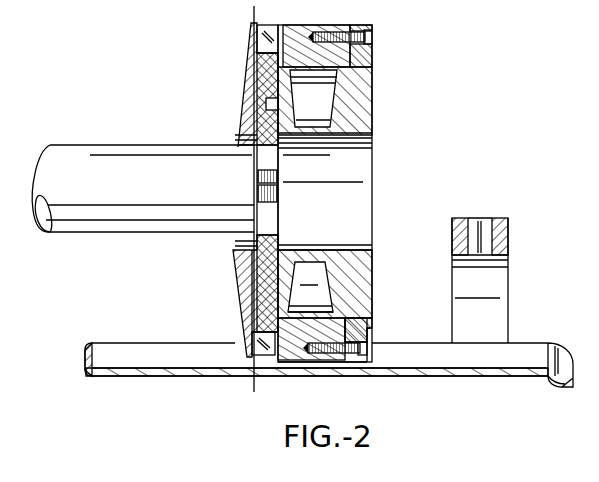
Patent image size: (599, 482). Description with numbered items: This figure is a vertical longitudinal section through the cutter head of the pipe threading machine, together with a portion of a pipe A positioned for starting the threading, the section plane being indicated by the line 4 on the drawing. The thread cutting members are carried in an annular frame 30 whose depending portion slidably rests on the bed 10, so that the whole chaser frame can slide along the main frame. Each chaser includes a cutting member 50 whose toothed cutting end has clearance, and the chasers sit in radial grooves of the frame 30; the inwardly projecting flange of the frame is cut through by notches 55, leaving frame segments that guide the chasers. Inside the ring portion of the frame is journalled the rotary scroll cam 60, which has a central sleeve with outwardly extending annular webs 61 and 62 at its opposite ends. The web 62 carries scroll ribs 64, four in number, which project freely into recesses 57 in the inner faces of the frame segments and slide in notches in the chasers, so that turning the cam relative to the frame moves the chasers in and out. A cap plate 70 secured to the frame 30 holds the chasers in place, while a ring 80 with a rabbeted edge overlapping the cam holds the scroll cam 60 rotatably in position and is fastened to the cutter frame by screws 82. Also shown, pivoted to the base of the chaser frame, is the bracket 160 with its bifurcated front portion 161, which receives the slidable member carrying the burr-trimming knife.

The section line 4- 4 is at (254, 6).
The bed 10 is at (410, 375).
The annular frame 30 is at (312, 33).
The cutting member 50 is at (264, 118).
The notches 55 is at (262, 38).
The recesses 57 is at (265, 287).
The scroll cam 60 is at (278, 176).
The annular web 61 is at (362, 93).
The annular web 62 is at (289, 101).
The scroll ribs 64 is at (266, 100).
The cap plate 70 is at (247, 52).
The ring 80 is at (372, 46).
The screws 82 is at (366, 34).
The bracket 160 is at (505, 289).
The bifurcated front portion 161 is at (508, 240).
The shaft A is at (143, 188).